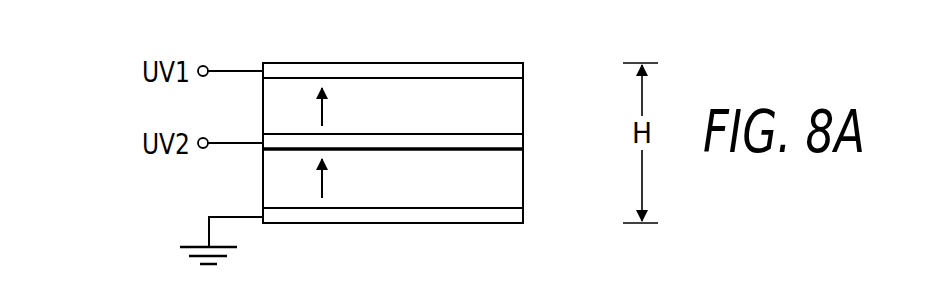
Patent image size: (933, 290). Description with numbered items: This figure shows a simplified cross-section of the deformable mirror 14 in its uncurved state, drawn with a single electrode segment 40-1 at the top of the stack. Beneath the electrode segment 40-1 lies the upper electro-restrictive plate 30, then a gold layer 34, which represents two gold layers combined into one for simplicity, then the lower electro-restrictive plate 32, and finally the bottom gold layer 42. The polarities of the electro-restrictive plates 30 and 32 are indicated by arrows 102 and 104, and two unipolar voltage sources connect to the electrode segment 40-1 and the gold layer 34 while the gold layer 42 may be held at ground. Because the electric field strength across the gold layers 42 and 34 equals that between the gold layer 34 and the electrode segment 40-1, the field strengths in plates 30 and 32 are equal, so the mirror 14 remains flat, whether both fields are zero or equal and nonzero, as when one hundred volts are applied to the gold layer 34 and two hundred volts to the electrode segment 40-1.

The mirror 14 is at (511, 243).
The electrode segment 40-1 is at (523, 72).
The electro-restrictive plate 30 is at (523, 105).
The gold layer 34 is at (523, 142).
The electro-restrictive plate 32 is at (523, 178).
The gold layer 42 is at (523, 213).
The arrow 102 is at (322, 108).
The arrow 104 is at (322, 180).